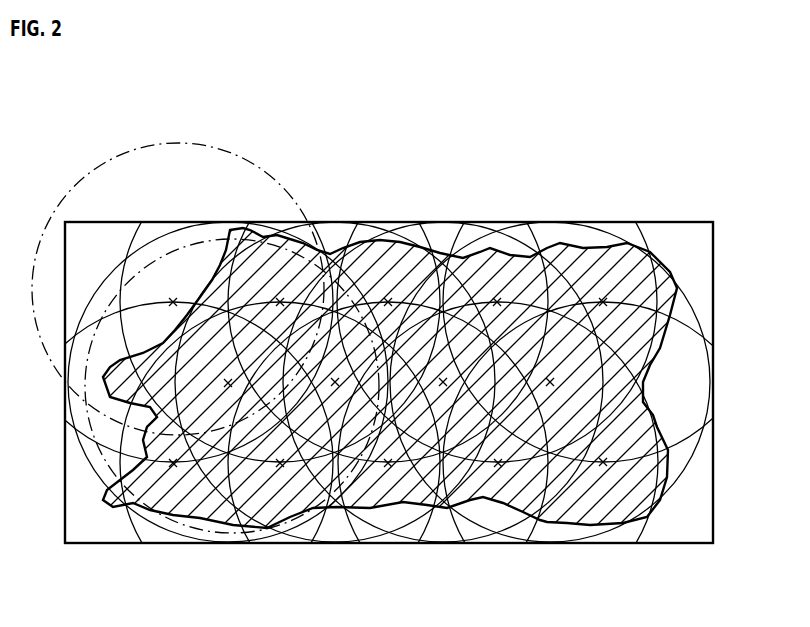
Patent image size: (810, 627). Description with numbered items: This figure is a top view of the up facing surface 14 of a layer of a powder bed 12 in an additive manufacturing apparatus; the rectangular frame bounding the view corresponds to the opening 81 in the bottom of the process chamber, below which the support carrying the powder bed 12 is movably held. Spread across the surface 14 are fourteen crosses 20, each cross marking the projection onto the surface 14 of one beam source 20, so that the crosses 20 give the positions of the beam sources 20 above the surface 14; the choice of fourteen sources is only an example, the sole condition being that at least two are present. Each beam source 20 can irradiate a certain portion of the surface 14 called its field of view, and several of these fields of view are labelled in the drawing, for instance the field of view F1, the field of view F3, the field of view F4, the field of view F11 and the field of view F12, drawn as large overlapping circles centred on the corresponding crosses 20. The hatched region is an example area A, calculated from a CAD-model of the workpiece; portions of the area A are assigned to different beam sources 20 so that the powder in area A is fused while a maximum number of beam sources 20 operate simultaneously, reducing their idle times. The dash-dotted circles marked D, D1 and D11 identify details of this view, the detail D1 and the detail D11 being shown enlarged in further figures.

The powder bed 12 is at (680, 408).
The surface 14 is at (670, 255).
The opening 81 is at (713, 300).
The beam source 20 is at (392, 368).
The area A is at (372, 256).
The detail D is at (222, 240).
The detail D1 is at (165, 145).
The detail D11 is at (223, 533).
The field of view F1 is at (100, 442).
The field of view F3 is at (683, 443).
The field of view F4 is at (678, 322).
The field of view F11 is at (158, 533).
The field of view F12 is at (620, 228).